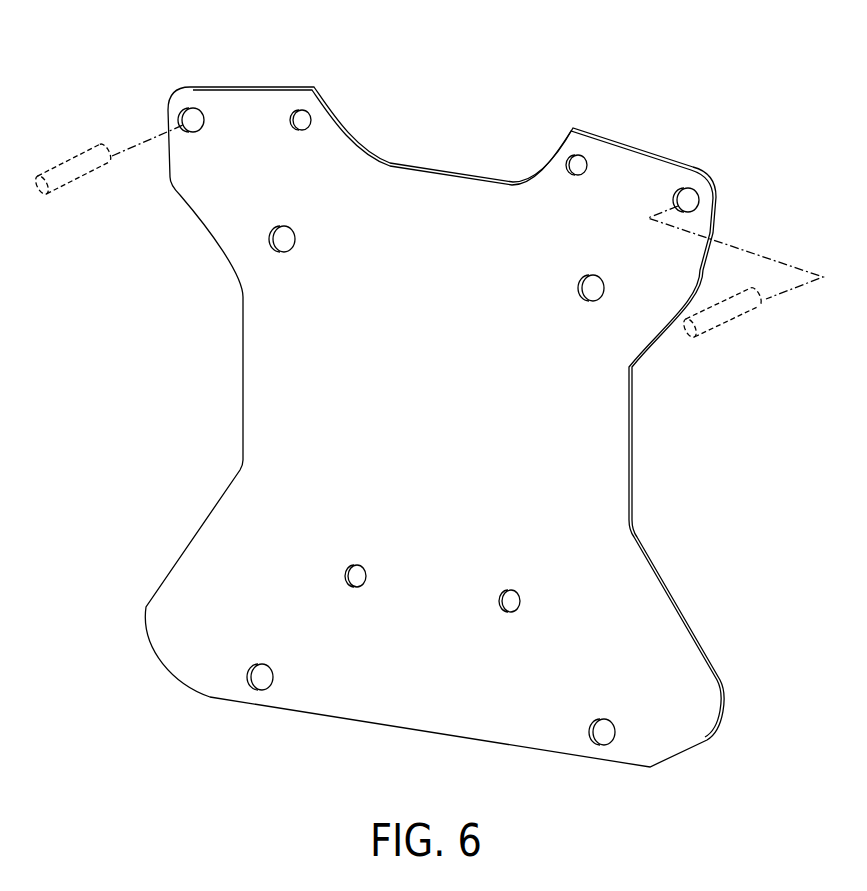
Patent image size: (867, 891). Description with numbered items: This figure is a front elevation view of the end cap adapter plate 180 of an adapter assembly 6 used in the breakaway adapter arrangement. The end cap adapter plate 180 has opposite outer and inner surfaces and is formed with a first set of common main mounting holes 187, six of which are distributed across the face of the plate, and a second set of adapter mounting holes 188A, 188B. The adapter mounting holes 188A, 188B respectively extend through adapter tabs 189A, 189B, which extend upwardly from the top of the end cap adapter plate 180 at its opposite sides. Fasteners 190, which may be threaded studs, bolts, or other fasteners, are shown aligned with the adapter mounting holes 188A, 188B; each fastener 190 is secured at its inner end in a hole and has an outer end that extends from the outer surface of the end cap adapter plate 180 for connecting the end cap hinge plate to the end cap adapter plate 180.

The adapter assembly 6 is at (468, 52).
The end cap adapter plate 180 is at (447, 157).
The common main mounting holes 187 is at (282, 242).
The adapter mounting hole 188A is at (188, 116).
The adapter mounting hole 188B is at (692, 198).
The adapter tab 189A is at (274, 79).
The adapter tab 189B is at (611, 131).
The fastener 190 is at (67, 157).